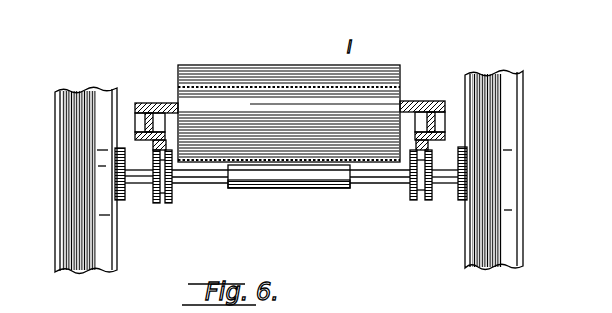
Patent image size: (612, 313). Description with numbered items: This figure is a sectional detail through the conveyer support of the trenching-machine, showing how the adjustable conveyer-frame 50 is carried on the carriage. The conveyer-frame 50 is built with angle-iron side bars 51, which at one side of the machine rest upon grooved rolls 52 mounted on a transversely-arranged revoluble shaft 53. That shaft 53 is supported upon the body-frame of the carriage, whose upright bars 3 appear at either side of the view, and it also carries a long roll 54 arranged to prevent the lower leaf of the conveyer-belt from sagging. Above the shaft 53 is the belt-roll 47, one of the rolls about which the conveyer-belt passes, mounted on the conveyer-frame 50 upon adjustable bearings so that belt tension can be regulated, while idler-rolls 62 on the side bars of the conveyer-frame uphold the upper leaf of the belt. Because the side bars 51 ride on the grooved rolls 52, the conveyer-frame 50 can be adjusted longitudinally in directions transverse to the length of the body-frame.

The upright bar 3 is at (58, 117).
The belt-roll 47 is at (222, 138).
The idler-roll 62 is at (268, 102).
The conveyer-frame 50 is at (162, 103).
The angle-iron side bar 51 is at (150, 146).
The grooved roll 52 is at (166, 203).
The revoluble shaft 53 is at (372, 184).
The long roll 54 is at (296, 186).